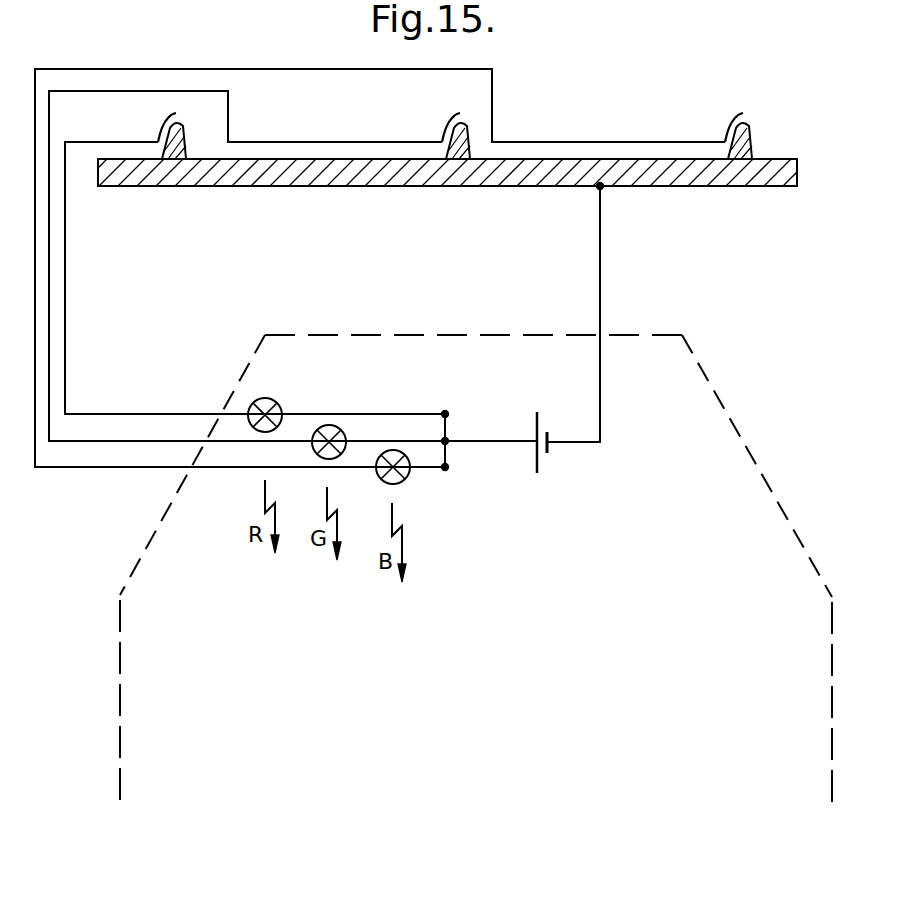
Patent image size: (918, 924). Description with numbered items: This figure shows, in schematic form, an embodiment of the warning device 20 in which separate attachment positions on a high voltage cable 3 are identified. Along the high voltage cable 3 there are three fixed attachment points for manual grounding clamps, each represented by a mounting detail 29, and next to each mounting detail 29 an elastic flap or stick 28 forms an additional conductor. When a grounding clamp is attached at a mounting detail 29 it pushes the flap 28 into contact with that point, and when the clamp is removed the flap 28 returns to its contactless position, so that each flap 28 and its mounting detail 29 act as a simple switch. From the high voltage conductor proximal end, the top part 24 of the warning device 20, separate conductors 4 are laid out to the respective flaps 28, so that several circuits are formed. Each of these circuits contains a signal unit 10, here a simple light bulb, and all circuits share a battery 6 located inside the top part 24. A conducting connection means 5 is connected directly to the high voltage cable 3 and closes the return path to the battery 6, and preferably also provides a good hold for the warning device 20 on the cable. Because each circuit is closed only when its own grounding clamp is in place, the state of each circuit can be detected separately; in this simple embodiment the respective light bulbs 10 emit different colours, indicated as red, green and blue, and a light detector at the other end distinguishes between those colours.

The high voltage cable 3 is at (232, 187).
The conductor 4 is at (35, 386).
The conducting connection means 5 is at (603, 307).
The battery 6 is at (549, 452).
The unit delivering a signal (light bulb) 10 is at (384, 452).
The warning device 20 is at (472, 786).
The top part of warning device 24 is at (118, 699).
The flap or stick 28 is at (160, 130).
The mounting detail (attachment point for grounding clamp) 29 is at (190, 136).